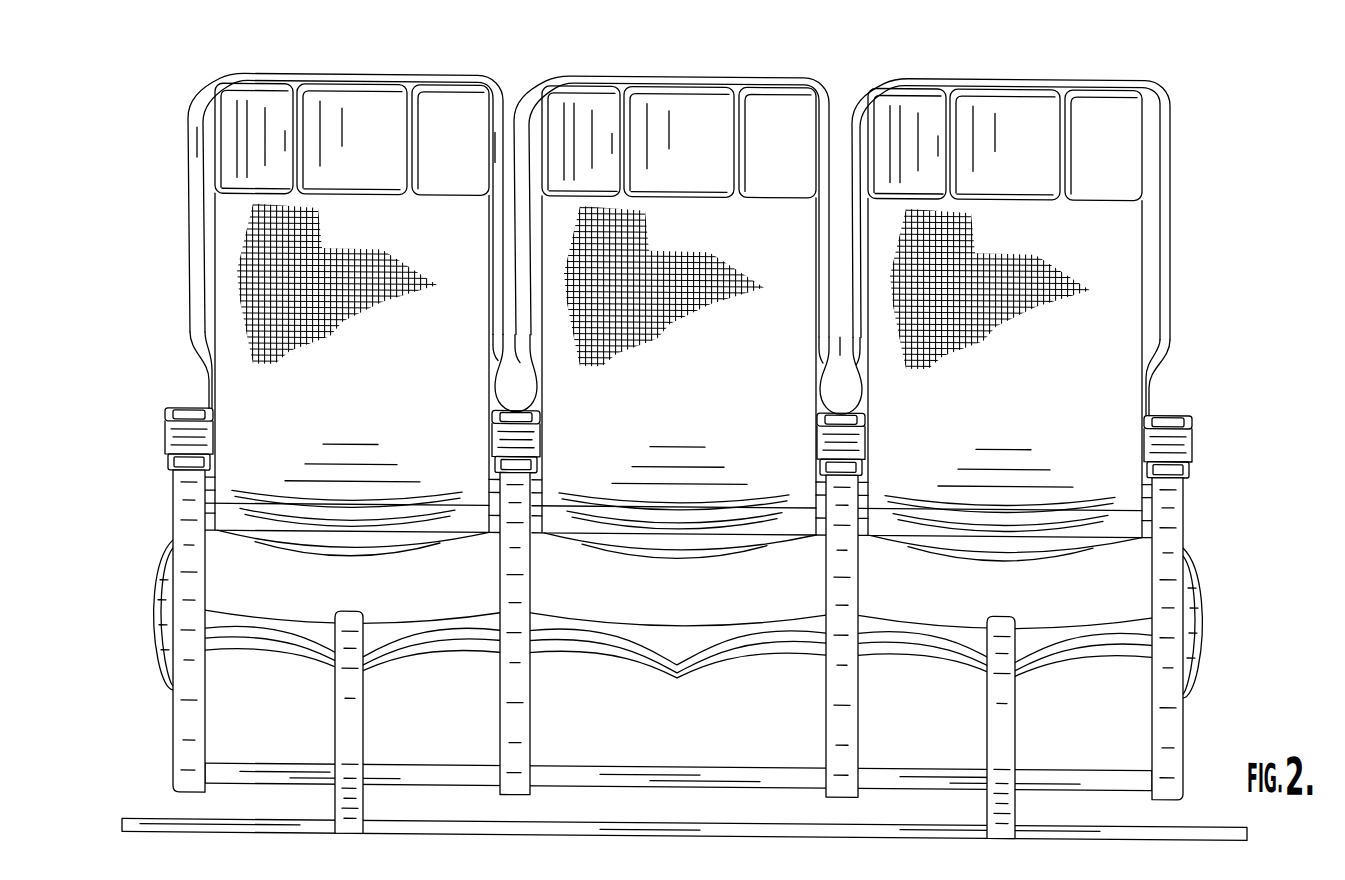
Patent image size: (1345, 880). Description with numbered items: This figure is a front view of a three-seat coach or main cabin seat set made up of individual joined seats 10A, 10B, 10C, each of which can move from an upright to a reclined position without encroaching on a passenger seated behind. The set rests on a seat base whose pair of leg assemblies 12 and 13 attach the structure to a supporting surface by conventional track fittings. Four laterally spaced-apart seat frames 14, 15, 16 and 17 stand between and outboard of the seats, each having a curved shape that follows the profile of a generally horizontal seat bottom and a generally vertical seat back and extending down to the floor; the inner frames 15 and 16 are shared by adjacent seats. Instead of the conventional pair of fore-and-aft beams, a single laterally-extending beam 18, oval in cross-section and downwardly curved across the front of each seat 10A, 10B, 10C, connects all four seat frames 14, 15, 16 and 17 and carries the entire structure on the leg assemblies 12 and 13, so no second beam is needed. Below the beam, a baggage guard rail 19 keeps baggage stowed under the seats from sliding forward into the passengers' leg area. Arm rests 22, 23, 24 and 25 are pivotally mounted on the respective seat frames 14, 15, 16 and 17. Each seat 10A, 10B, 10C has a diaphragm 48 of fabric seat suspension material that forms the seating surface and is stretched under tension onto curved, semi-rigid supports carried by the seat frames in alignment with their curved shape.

The seat 10A is at (310, 77).
The seat 10B is at (657, 75).
The seat 10C is at (1050, 77).
The leg assembly 12 is at (335, 715).
The leg assembly 13 is at (987, 718).
The seat frame 14 is at (173, 727).
The seat frame 15 is at (500, 710).
The seat frame 16 is at (826, 713).
The seat frame 17 is at (1152, 714).
The beam 18 is at (432, 615).
The baggage guard rail 19 is at (655, 766).
The arm rest 22 is at (190, 407).
The arm rest 23 is at (490, 438).
The arm rest 24 is at (838, 403).
The arm rest 25 is at (1170, 405).
The diaphragm 48 is at (397, 381).